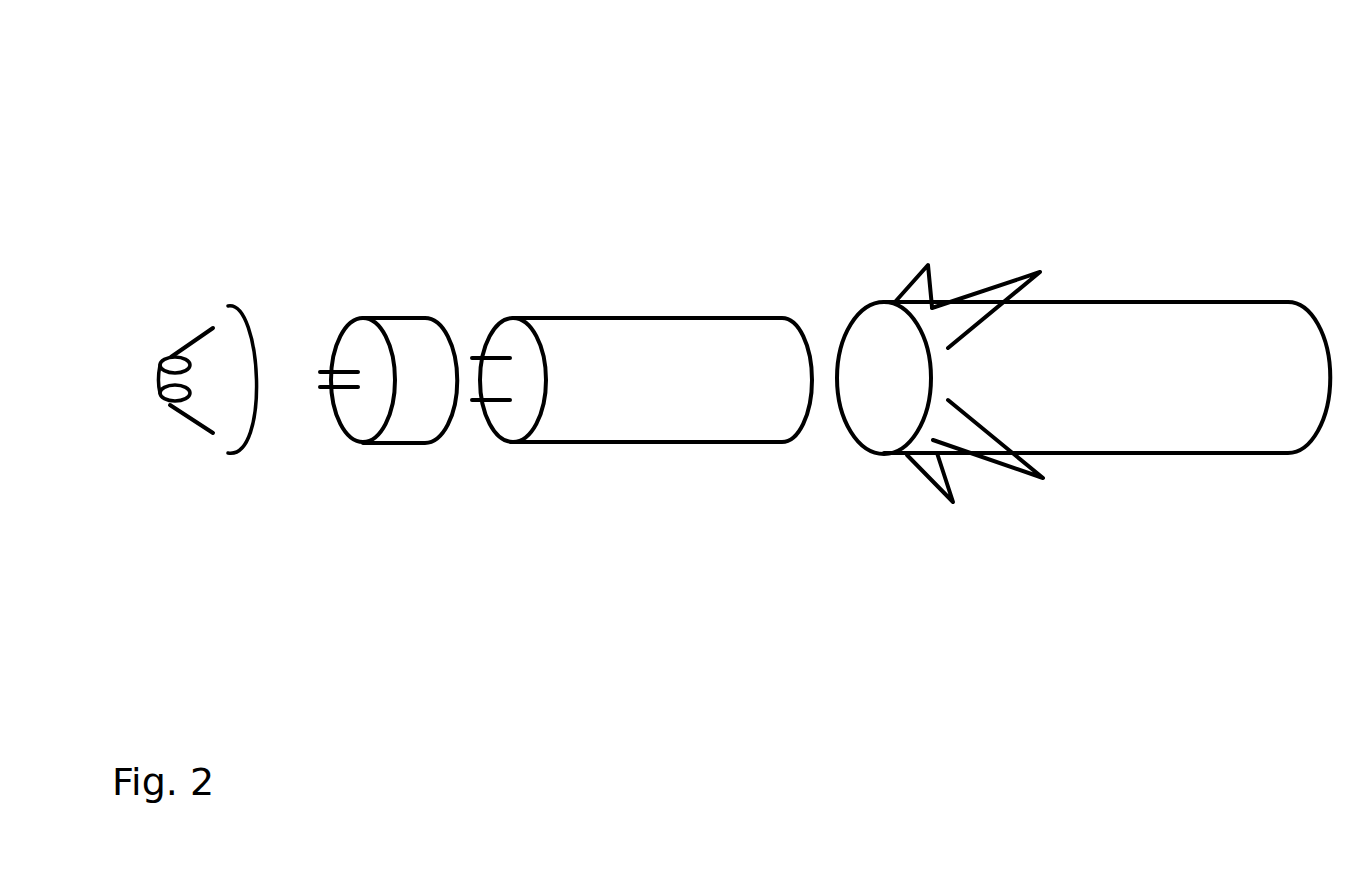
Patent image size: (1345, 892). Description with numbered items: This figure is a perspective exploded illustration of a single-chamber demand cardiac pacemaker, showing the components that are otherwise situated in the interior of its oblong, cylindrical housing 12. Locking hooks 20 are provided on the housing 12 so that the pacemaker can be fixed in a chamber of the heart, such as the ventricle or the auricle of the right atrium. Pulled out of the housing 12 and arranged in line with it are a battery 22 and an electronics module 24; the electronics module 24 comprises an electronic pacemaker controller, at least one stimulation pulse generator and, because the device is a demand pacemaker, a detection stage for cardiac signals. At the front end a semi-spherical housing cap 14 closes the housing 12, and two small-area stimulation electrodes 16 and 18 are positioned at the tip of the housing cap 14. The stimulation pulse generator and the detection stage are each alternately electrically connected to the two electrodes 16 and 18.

The housing 12 is at (1150, 302).
The locking hooks 20 is at (1013, 273).
The battery 22 is at (550, 315).
The electronics module 24 is at (407, 315).
The housing cap 14 is at (238, 333).
The stimulation electrode 16 is at (172, 355).
The stimulation electrode 18 is at (170, 405).